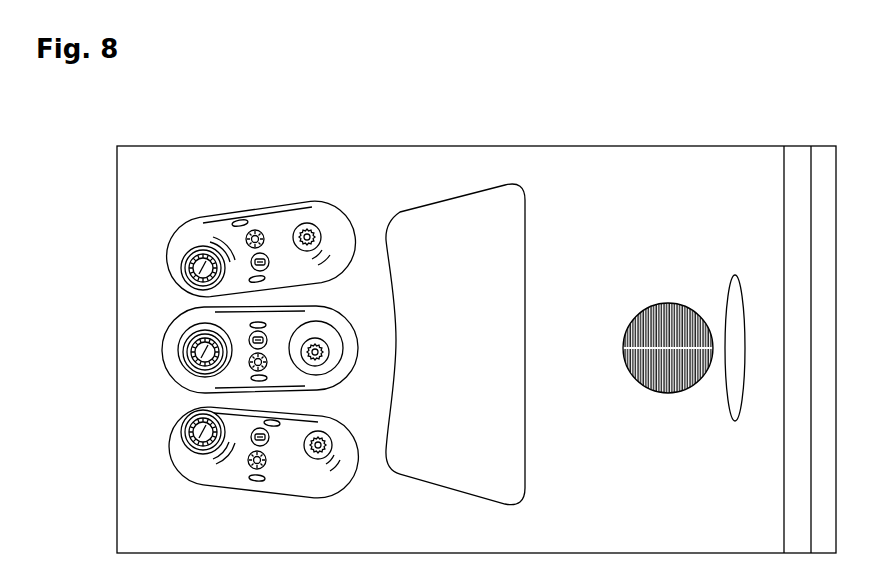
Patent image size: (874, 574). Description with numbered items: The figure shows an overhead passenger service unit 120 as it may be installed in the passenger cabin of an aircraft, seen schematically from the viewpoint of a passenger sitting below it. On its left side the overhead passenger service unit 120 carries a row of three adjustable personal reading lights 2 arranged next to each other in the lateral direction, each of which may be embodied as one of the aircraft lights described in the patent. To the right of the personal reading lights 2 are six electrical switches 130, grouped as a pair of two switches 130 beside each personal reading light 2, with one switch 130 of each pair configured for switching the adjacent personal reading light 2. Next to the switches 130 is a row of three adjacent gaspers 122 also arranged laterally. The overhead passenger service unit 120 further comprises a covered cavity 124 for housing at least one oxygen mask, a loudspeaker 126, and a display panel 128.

The personal reading light 2 is at (190, 245).
The overhead passenger service unit 120 is at (738, 128).
The gasper 122 is at (327, 225).
The covered cavity 124 is at (503, 263).
The loudspeaker 126 is at (668, 300).
The display panel 128 is at (745, 300).
The electrical switch 130 is at (252, 231).